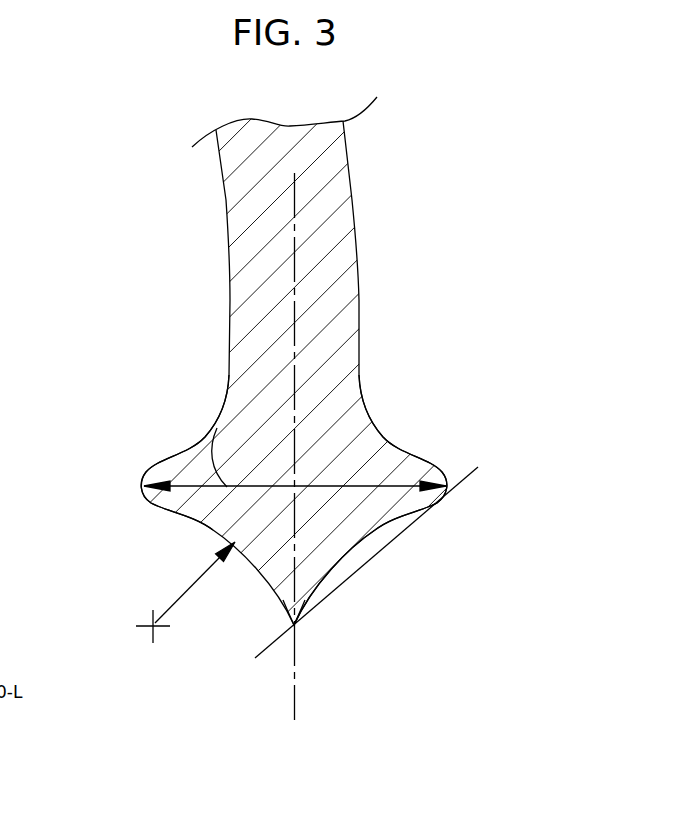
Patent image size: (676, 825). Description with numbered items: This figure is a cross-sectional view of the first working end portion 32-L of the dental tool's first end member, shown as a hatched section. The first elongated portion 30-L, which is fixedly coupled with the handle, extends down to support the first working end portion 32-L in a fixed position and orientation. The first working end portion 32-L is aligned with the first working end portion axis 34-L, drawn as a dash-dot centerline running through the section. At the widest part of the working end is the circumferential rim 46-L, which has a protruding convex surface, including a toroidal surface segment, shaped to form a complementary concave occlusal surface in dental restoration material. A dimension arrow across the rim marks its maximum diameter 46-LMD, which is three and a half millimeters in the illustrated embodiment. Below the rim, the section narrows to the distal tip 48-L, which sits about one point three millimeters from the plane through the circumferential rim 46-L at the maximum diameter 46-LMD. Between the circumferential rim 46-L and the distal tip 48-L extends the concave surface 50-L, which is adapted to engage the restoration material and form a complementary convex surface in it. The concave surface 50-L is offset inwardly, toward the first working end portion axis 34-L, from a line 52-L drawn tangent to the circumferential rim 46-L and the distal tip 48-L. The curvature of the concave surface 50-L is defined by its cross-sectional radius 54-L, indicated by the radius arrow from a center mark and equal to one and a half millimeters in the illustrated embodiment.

The first elongated portion 30-L is at (354, 208).
The first working end portion 32-L is at (118, 448).
The first working end portion axis 34-L is at (295, 311).
The circumferential rim 46-L is at (443, 480).
The maximum diameter 46-LMD is at (213, 432).
The distal tip 48-L is at (312, 643).
The concave surface 50-L is at (375, 553).
The tangent line 52-L is at (468, 476).
The cross-sectional radius 54-L is at (189, 590).